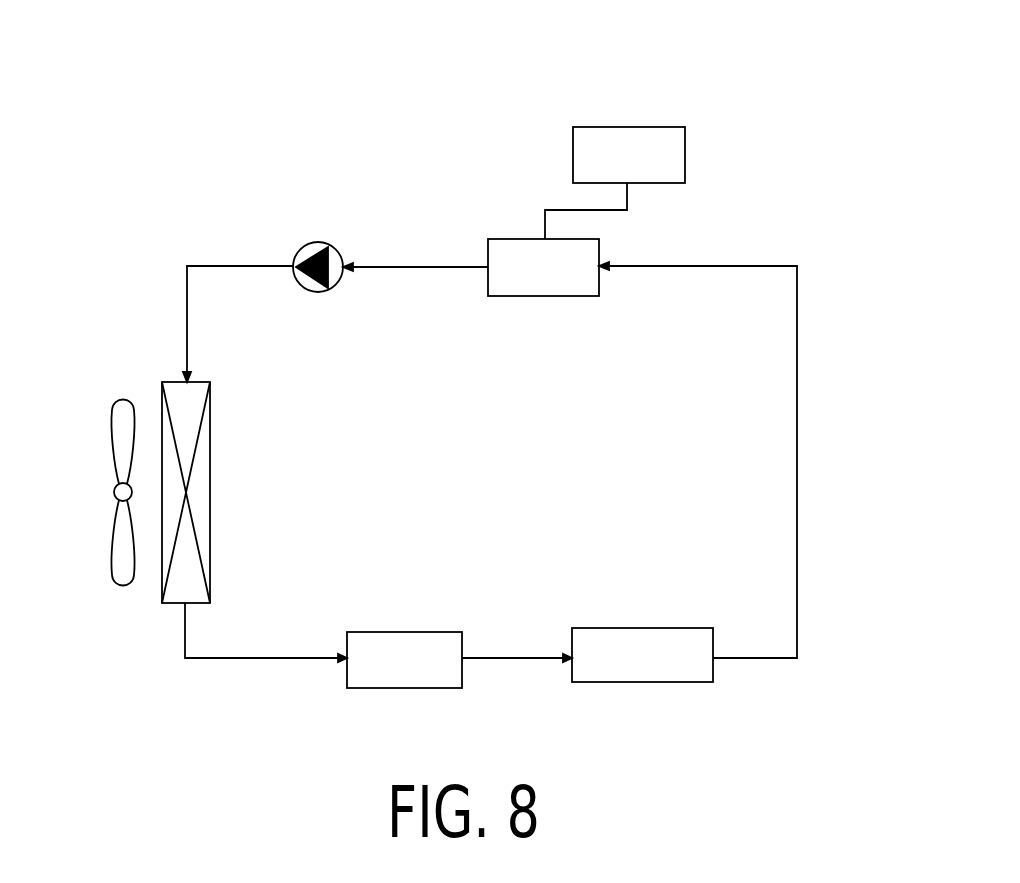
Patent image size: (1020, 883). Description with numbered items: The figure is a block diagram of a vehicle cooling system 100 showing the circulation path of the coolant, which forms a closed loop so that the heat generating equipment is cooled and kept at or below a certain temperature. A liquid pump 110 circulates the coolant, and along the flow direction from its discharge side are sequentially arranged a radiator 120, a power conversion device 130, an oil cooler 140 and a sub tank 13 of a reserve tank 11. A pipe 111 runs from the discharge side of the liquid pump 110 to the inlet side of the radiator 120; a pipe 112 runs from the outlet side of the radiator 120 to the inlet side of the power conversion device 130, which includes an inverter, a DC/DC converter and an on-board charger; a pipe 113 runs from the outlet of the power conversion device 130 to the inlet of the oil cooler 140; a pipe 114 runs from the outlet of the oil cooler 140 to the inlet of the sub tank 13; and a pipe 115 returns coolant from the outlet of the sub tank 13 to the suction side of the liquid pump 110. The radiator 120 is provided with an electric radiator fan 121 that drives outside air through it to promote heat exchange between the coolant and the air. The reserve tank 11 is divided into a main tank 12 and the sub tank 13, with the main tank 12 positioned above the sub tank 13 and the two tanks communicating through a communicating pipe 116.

The cooling system 100 is at (374, 108).
The reserve tank 11 is at (545, 180).
The main tank 12 is at (668, 127).
The sub tank 13 is at (575, 298).
The liquid pump 110 is at (326, 246).
The pipe 111 is at (186, 312).
The pipe 112 is at (268, 660).
The pipe 113 is at (525, 660).
The pipe 114 is at (799, 492).
The pipe 115 is at (442, 266).
The communicating pipe 116 is at (629, 200).
The radiator 120 is at (212, 435).
The electric radiator fan 121 is at (115, 441).
The power conversion device 130 is at (422, 633).
The oil cooler 140 is at (671, 628).